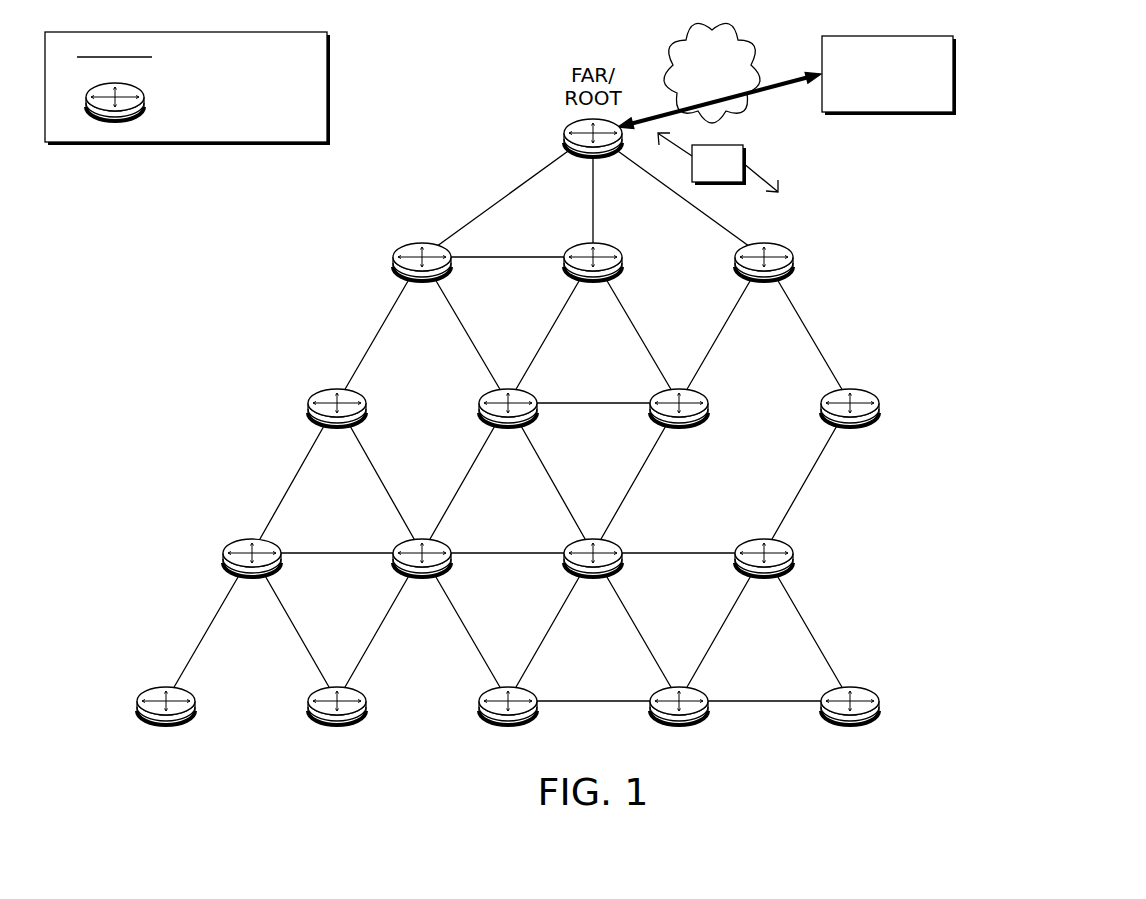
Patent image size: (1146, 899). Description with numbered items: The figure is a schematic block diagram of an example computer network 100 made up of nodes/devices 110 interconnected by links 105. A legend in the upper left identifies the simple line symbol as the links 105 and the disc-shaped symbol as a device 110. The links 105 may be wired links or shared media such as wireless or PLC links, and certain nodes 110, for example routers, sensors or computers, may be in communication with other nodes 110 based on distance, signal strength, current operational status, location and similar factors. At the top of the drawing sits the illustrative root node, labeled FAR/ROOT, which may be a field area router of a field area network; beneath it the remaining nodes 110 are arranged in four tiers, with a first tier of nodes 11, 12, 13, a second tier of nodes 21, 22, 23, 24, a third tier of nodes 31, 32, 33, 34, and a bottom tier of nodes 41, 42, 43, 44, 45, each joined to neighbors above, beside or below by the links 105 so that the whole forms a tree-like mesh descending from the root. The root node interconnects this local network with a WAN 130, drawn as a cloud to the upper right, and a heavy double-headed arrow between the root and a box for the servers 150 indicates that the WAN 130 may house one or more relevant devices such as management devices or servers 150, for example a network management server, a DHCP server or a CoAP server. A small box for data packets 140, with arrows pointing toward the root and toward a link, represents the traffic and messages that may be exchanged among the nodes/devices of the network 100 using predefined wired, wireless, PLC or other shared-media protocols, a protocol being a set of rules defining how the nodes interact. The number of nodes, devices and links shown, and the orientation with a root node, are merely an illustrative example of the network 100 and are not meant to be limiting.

The computer network 100 is at (1056, 82).
The links 105 is at (463, 373).
The nodes/devices 110 is at (193, 102).
The WAN 130 is at (698, 90).
The data packets 140 is at (703, 173).
The servers 150 is at (872, 95).
The node/device 11 is at (422, 280).
The node/device 12 is at (593, 280).
The node/device 13 is at (764, 280).
The node/device 21 is at (337, 425).
The node/device 22 is at (508, 425).
The node/device 23 is at (679, 425).
The node/device 24 is at (850, 425).
The node/device 31 is at (252, 575).
The node/device 32 is at (422, 575).
The node/device 33 is at (593, 575).
The node/device 34 is at (764, 575).
The node/device 41 is at (166, 723).
The node/device 42 is at (337, 723).
The node/device 43 is at (508, 723).
The node/device 44 is at (679, 723).
The node/device 45 is at (850, 723).